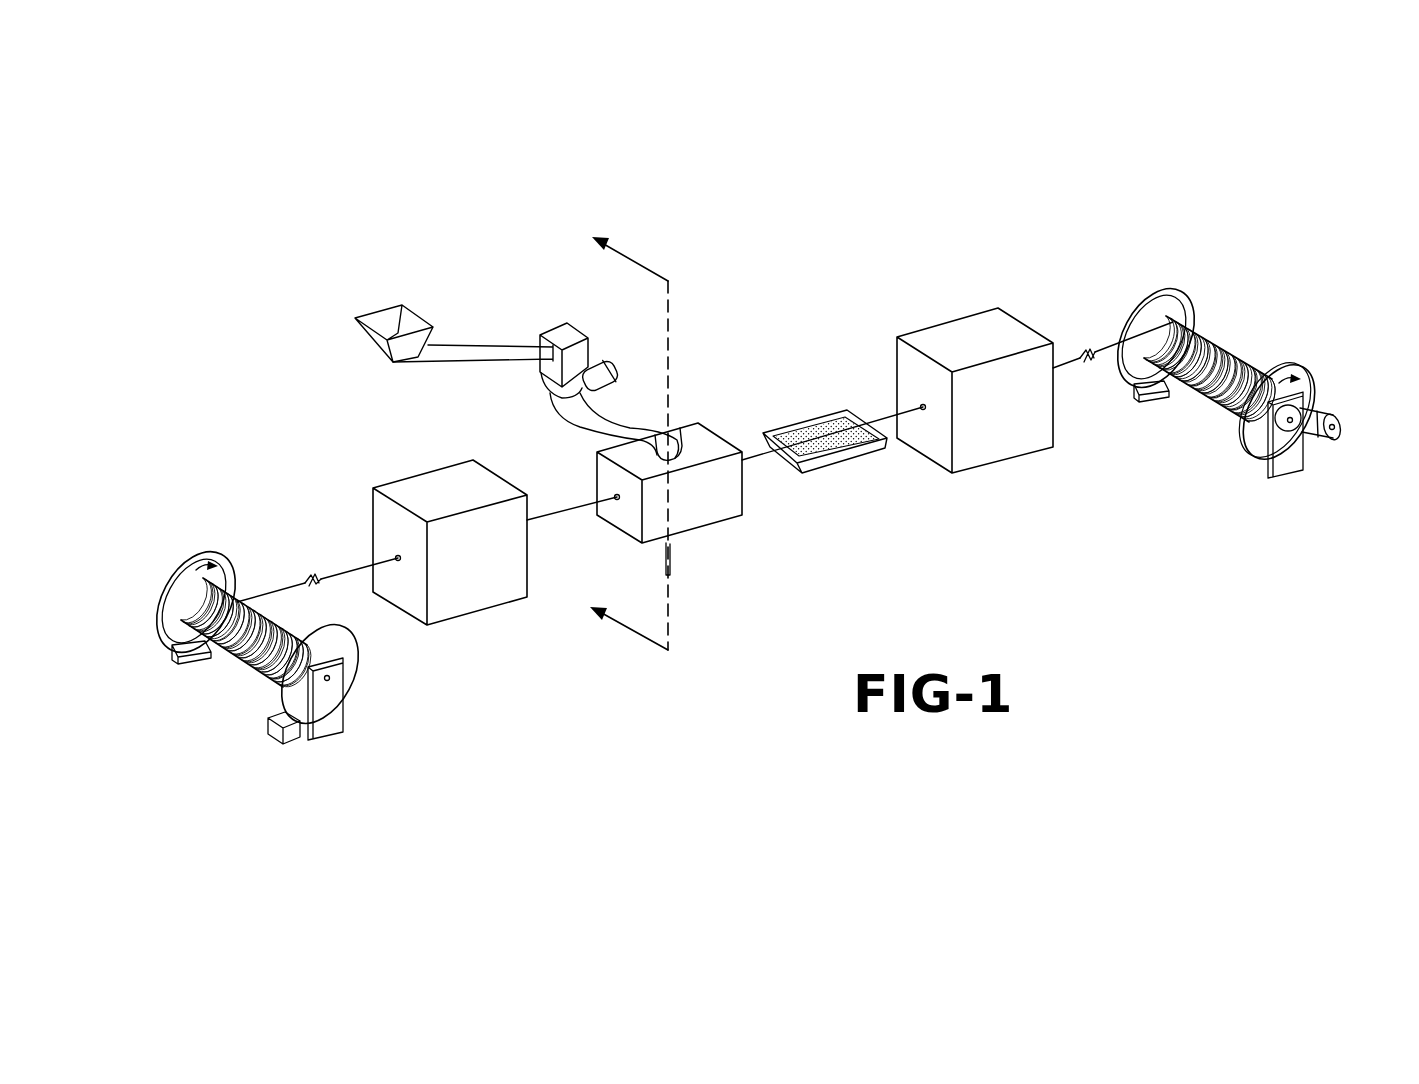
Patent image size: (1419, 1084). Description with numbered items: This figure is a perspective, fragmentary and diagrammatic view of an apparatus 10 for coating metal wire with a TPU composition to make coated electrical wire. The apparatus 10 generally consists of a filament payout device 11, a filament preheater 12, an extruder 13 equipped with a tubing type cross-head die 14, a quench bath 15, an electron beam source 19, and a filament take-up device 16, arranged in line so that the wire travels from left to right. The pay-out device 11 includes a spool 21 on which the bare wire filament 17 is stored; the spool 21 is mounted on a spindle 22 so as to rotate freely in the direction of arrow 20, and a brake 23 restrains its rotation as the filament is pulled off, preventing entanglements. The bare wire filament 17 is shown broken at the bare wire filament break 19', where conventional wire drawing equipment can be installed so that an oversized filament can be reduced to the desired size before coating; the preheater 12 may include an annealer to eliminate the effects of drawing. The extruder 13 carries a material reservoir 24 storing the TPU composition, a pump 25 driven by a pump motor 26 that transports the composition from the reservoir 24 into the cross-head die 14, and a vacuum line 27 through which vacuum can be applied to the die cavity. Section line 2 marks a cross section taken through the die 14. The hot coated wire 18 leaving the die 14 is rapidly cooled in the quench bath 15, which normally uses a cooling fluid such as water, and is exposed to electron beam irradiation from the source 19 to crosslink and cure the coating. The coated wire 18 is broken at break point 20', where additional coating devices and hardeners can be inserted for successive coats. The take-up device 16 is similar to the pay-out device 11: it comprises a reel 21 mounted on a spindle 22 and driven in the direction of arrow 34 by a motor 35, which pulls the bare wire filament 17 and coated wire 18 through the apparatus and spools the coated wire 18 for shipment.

The apparatus 10 is at (213, 348).
The filament payout device 11 is at (172, 565).
The filament preheater 12 is at (436, 492).
The extruder 13 is at (557, 332).
The tubing type cross-head die 14 is at (717, 500).
The quench bath 15 is at (838, 462).
The filament take-up device 16 is at (1322, 358).
The bare wire filament 17 is at (352, 567).
The coated wire 18 is at (1103, 353).
The electron beam source 19 is at (975, 361).
The bare wire filament break 19' is at (296, 530).
The arrow 20 is at (173, 601).
The break point 20' is at (1101, 405).
The spool 21 is at (343, 648).
The spindle 22 is at (331, 680).
The brake 23 is at (291, 738).
The material reservoir 24 is at (377, 323).
The pump 25 is at (553, 390).
The pump motor 26 is at (610, 380).
The vacuum line 27 is at (673, 553).
The section line 2 is at (617, 436).
The arrow 34 is at (1273, 377).
The motor 35 is at (1330, 407).